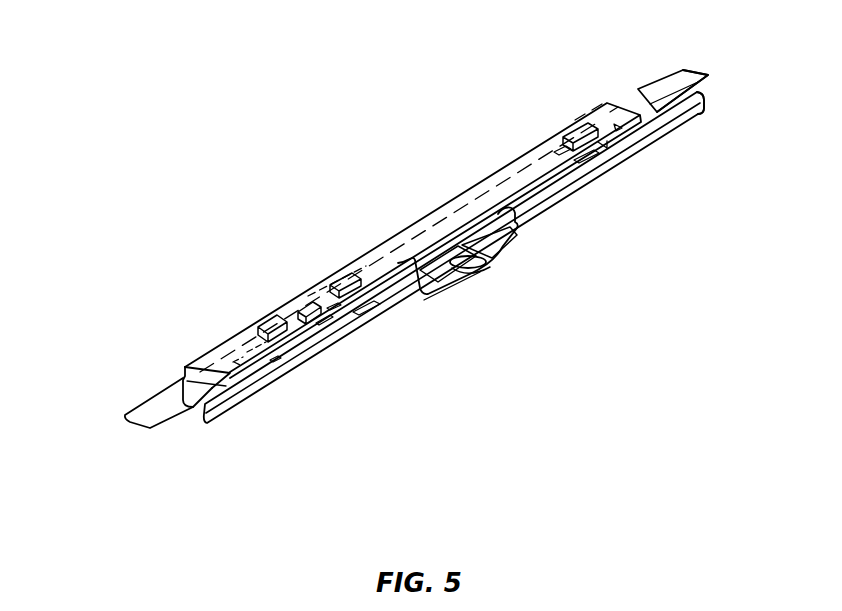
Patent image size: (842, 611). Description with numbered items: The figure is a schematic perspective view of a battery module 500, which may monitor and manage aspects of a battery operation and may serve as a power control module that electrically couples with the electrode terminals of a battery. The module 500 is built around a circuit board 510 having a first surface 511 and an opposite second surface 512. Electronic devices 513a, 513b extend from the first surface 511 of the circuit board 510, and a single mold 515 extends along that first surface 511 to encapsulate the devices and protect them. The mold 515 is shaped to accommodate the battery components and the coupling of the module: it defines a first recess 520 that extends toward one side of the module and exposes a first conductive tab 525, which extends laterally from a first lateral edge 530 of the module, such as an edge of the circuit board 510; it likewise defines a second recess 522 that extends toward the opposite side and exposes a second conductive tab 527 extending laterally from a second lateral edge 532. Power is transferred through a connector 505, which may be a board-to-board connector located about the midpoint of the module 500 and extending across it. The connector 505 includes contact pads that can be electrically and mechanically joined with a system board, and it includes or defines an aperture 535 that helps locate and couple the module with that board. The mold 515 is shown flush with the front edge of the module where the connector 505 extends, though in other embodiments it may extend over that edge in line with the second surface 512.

The battery module 500 is at (85, 82).
The connector 505 is at (494, 242).
The circuit board 510 is at (241, 403).
The first surface 511 is at (520, 236).
The second surface 512 is at (441, 297).
The electronic device 513a is at (596, 136).
The electronic device 513b is at (283, 315).
The mold 515 is at (368, 244).
The first recess 520 is at (183, 376).
The second recess 522 is at (645, 84).
The first conductive tab 525 is at (138, 410).
The second conductive tab 527 is at (709, 75).
The first lateral edge 530 is at (194, 418).
The second lateral edge 532 is at (706, 106).
The aperture 535 is at (490, 273).